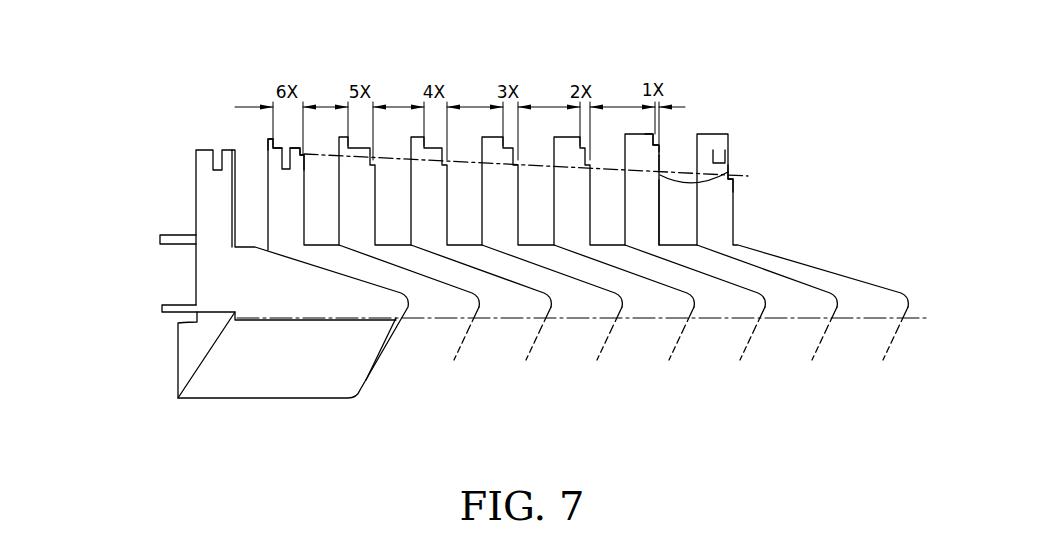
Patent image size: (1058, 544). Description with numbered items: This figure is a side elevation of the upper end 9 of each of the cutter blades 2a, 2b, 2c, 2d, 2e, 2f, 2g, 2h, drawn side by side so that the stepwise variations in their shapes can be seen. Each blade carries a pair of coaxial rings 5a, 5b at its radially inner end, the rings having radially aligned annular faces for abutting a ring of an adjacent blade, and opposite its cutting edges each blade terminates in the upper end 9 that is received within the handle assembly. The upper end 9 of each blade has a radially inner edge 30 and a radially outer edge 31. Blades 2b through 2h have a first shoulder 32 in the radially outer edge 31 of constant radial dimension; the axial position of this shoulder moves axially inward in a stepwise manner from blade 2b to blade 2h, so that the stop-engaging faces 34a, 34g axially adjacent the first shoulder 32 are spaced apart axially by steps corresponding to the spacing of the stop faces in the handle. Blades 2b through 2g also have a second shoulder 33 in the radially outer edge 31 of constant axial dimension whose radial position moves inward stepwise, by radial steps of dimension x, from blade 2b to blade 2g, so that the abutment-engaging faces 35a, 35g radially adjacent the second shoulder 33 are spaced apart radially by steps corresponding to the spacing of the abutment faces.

The upper end 9 is at (820, 187).
The blade 2a is at (305, 310).
The blade 2b is at (430, 307).
The blade 2c is at (497, 307).
The blade 2d is at (568, 307).
The blade 2e is at (643, 307).
The blade 2f is at (712, 307).
The blade 2g is at (793, 307).
The blade 2h is at (857, 307).
The coaxial ring 5a is at (160, 238).
The coaxial ring 5b is at (166, 313).
The radially inner edge 30 is at (620, 166).
The radially outer edge 31 is at (665, 214).
The first shoulder 32 is at (660, 173).
The second shoulder 33 is at (660, 163).
The stop-engaging face 34a is at (303, 158).
The stop-engaging face 34g is at (734, 172).
The abutment-engaging face 35a is at (270, 143).
The abutment-engaging face 35g is at (655, 144).